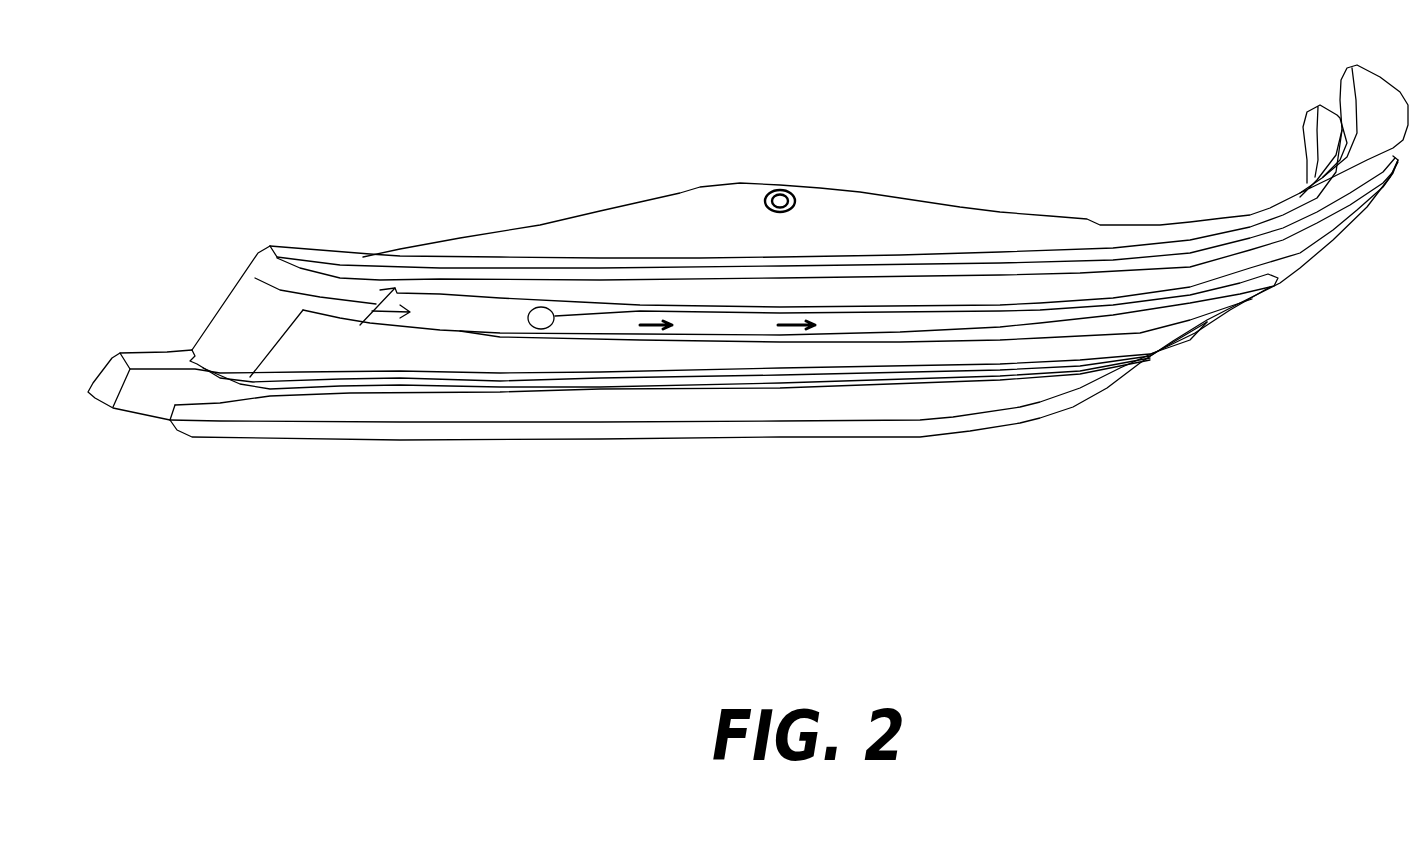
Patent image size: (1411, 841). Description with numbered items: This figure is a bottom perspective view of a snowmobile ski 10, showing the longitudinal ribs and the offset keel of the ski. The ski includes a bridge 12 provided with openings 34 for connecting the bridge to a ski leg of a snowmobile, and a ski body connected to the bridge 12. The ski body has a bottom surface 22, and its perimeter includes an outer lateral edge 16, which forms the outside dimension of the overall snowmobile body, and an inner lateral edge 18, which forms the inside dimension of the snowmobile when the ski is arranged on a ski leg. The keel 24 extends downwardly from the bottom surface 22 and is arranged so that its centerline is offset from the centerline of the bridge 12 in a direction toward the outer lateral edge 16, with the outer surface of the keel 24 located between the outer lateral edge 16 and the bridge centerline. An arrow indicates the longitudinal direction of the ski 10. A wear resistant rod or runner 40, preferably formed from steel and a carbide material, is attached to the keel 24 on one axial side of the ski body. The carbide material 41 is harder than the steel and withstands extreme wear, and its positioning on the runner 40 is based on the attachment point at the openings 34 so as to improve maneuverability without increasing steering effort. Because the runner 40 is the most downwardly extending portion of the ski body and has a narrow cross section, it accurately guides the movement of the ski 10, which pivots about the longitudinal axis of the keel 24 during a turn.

The ski 10 is at (1268, 362).
The bridge 12 is at (867, 210).
The outer lateral edge 16 is at (335, 259).
The inner lateral edge 18 is at (273, 442).
The bottom surface 22 is at (510, 505).
The keel 24 is at (255, 278).
The openings 34 is at (790, 194).
The runner 40 is at (737, 322).
The carbide material 41 is at (657, 328).